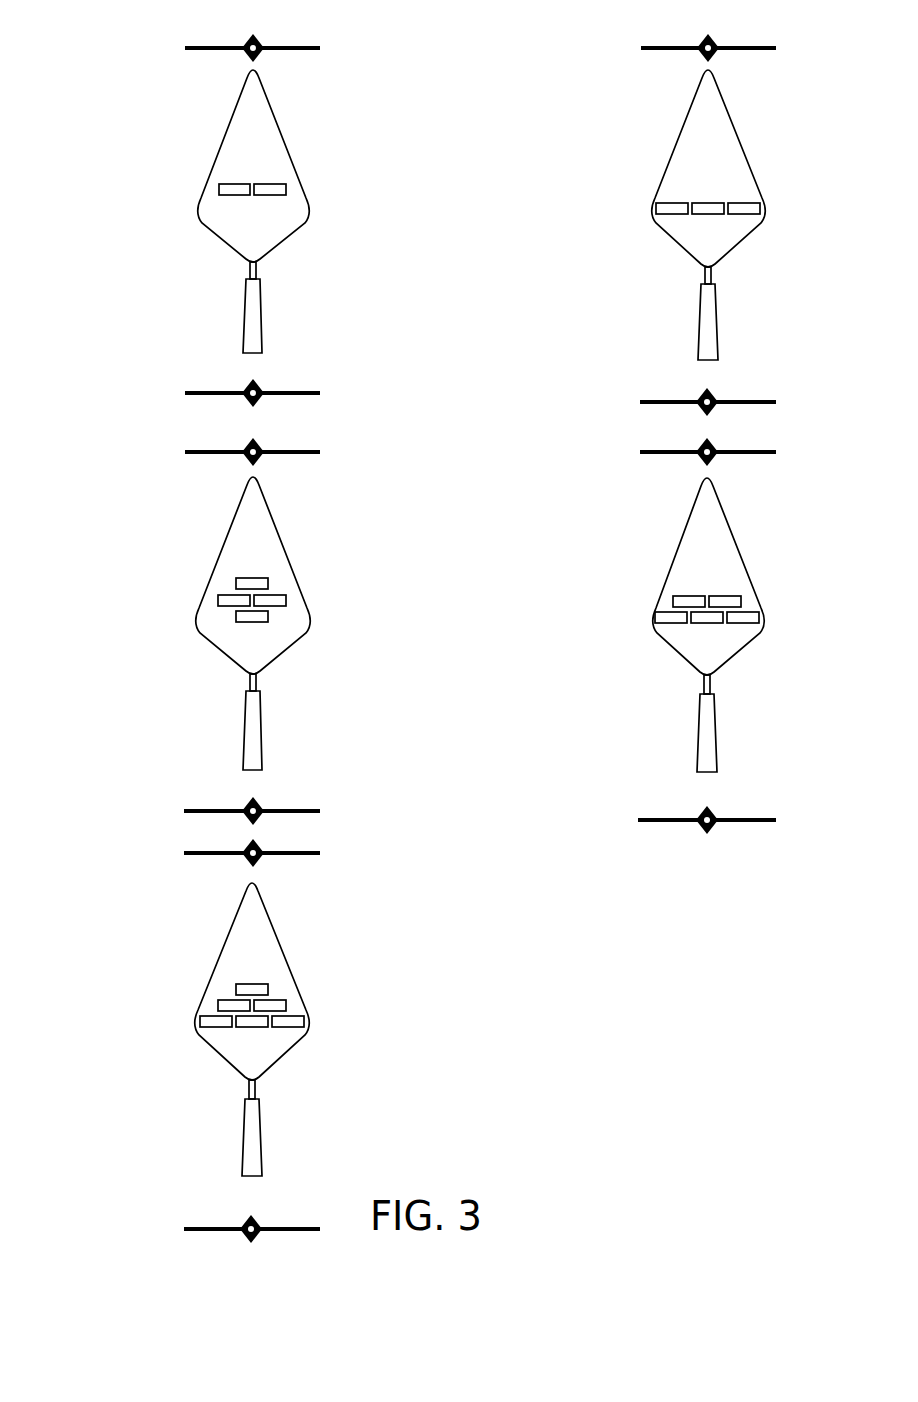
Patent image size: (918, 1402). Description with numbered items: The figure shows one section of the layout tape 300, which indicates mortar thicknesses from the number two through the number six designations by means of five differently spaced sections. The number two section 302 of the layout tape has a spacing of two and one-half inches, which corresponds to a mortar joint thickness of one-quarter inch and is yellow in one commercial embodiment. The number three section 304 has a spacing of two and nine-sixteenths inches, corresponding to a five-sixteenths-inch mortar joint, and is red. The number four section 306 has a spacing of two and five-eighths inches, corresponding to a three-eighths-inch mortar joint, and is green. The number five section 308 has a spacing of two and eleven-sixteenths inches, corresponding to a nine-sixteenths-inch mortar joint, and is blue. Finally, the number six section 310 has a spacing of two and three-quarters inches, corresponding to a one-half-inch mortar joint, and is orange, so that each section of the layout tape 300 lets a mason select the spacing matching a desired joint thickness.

The layout tape 300 is at (489, 34).
The number two section 302 is at (300, 138).
The number three section 304 is at (750, 138).
The number four section 306 is at (300, 538).
The number five section 308 is at (750, 537).
The number six section 310 is at (300, 931).